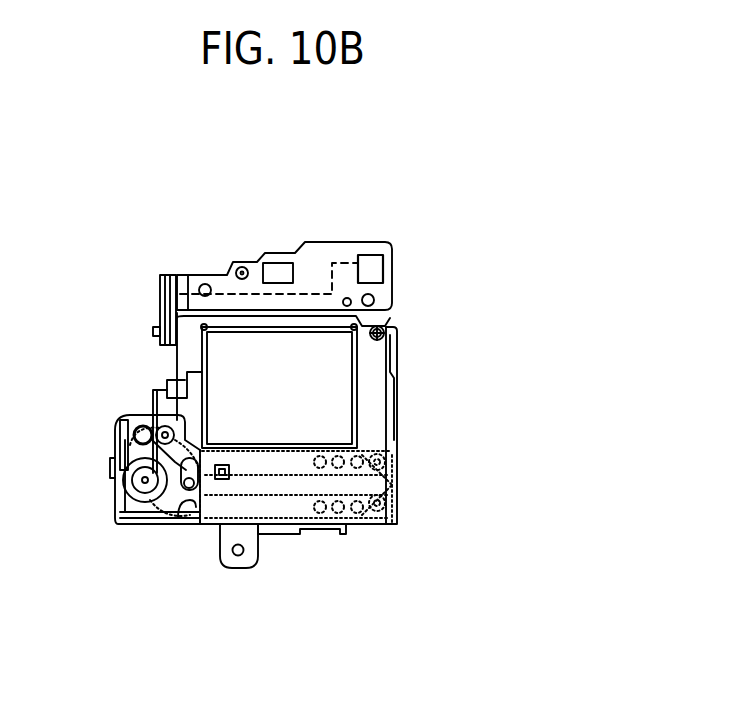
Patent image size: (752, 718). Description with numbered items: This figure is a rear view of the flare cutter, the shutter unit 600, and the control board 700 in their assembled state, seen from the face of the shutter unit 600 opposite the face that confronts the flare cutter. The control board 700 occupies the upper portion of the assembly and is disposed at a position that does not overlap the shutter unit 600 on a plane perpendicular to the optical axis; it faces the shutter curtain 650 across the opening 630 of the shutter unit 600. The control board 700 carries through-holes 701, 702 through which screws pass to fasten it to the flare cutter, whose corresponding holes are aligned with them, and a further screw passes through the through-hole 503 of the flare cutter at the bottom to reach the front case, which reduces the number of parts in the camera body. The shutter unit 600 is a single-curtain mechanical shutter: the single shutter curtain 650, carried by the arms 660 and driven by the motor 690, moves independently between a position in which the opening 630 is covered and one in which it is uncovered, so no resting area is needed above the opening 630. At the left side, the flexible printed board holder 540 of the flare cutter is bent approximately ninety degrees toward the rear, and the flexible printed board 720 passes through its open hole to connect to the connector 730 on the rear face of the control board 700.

The through-hole 503 is at (240, 556).
The flexible printed board holder 540 is at (160, 275).
The shutter unit 600 is at (378, 384).
The opening 630 is at (307, 392).
The shutter curtain 650 is at (350, 478).
The arms 660 is at (278, 508).
The motor 690 is at (143, 483).
The control board 700 is at (341, 250).
The through-hole 701 is at (375, 303).
The through-hole 702 is at (240, 266).
The flexible printed board 720 is at (340, 282).
The connector 730 is at (368, 268).